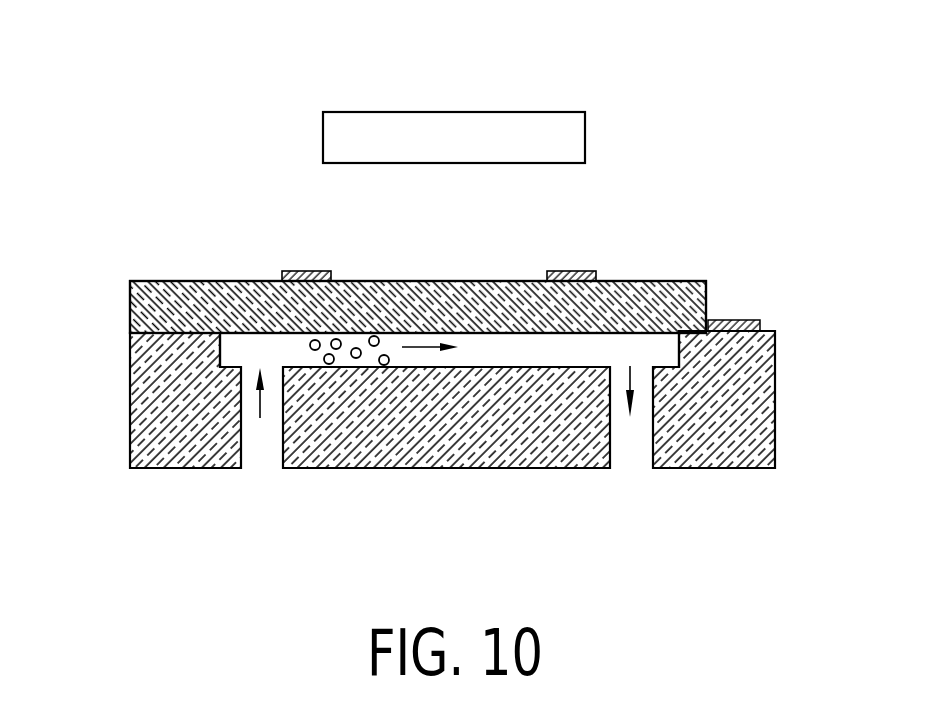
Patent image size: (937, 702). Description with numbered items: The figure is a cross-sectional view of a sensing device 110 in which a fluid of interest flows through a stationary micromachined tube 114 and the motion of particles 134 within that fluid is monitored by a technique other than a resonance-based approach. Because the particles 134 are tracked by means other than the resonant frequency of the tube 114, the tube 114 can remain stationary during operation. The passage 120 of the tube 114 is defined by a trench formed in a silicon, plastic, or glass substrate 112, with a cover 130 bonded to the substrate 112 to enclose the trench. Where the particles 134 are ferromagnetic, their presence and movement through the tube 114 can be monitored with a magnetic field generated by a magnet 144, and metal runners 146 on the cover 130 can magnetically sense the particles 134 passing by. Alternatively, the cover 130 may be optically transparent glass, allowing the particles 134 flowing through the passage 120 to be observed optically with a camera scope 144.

The sensing device 110 is at (141, 78).
The substrate 112 is at (758, 402).
The micromachined tube 114 is at (219, 261).
The passage 120 is at (583, 348).
The cover 130 is at (458, 283).
The particles 134 is at (333, 363).
The magnet 144 is at (493, 123).
The metal runners 146 is at (307, 268).